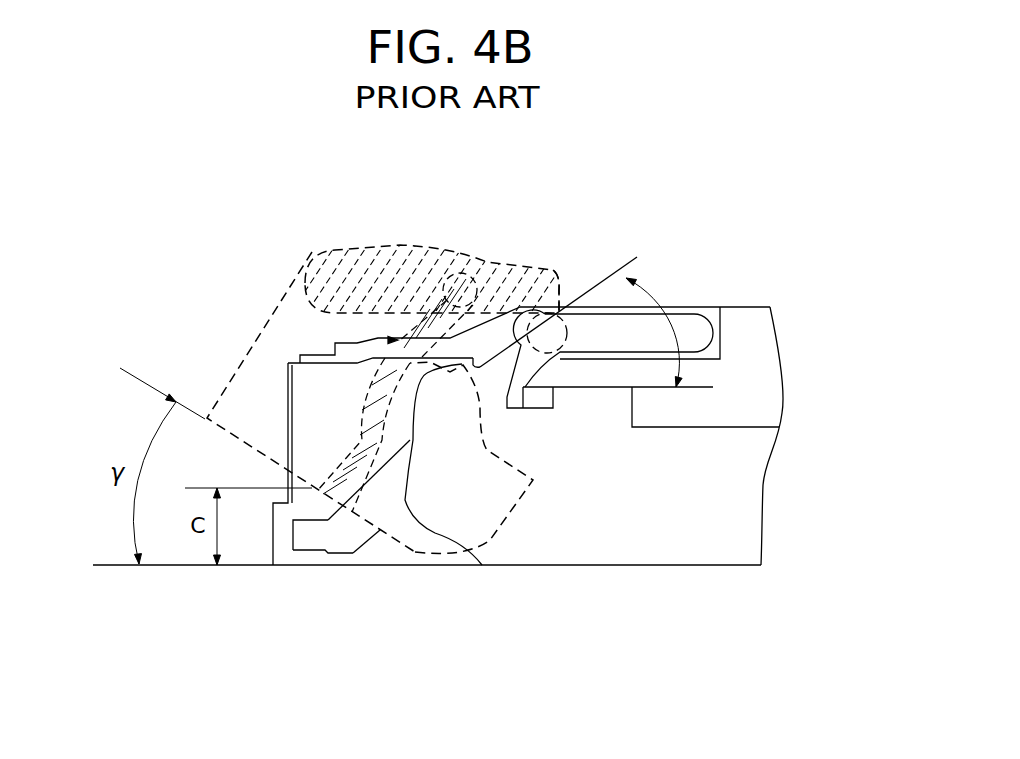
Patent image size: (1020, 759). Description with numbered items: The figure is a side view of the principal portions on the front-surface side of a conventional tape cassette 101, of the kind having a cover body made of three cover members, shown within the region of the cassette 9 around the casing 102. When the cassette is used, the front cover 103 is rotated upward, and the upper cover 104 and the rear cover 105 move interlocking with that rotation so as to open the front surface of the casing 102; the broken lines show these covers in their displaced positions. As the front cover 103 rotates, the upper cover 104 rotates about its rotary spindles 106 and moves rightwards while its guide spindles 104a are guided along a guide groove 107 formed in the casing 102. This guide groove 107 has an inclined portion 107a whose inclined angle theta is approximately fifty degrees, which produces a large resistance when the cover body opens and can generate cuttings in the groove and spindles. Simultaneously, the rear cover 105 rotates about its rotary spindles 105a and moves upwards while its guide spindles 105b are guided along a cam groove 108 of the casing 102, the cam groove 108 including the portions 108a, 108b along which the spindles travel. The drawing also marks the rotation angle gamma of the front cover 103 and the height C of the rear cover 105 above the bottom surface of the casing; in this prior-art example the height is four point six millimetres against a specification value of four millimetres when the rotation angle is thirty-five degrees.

The card connector 9 is at (740, 286).
The tape cassette 101 is at (632, 568).
The casing 102 is at (720, 543).
The front cover 103 is at (290, 322).
The upper cover 104 is at (405, 238).
The guide spindles 104a is at (560, 305).
The rear cover 105 is at (335, 478).
The rotary spindles 105a is at (460, 272).
The guide spindles 105b is at (440, 527).
The rotary spindles 106 is at (332, 277).
The guide groove 107 is at (613, 340).
The inclined portion 107a is at (510, 362).
The cam groove 108 is at (338, 535).
The stopper hook 108a is at (363, 532).
The stopper arm 108b is at (397, 438).